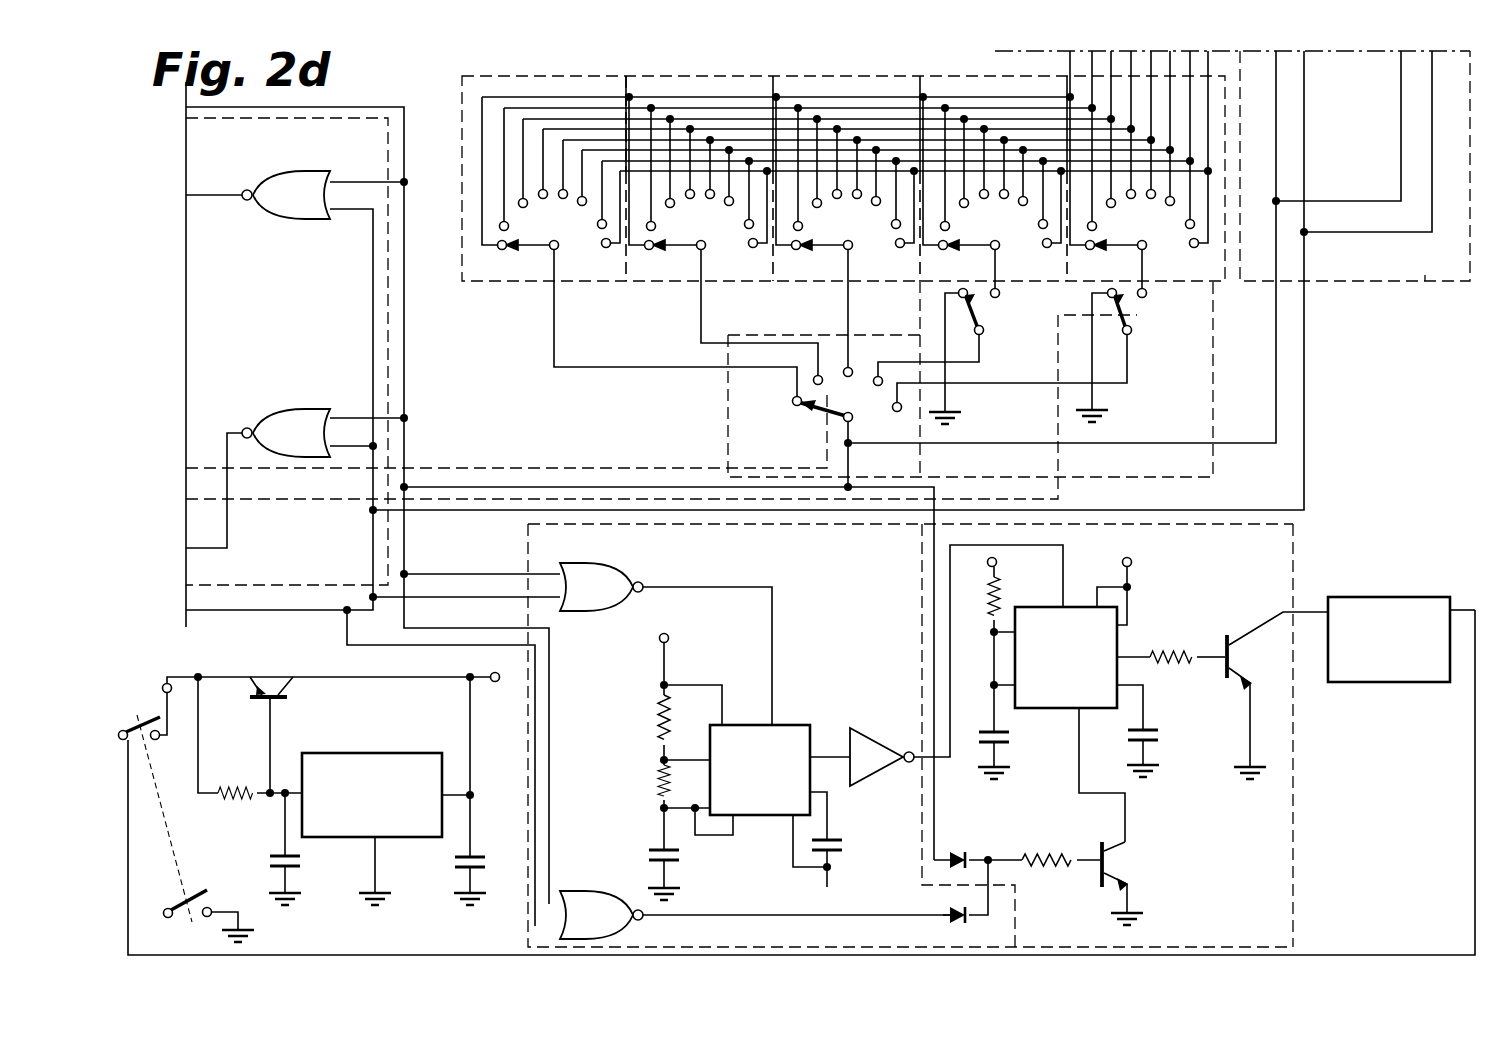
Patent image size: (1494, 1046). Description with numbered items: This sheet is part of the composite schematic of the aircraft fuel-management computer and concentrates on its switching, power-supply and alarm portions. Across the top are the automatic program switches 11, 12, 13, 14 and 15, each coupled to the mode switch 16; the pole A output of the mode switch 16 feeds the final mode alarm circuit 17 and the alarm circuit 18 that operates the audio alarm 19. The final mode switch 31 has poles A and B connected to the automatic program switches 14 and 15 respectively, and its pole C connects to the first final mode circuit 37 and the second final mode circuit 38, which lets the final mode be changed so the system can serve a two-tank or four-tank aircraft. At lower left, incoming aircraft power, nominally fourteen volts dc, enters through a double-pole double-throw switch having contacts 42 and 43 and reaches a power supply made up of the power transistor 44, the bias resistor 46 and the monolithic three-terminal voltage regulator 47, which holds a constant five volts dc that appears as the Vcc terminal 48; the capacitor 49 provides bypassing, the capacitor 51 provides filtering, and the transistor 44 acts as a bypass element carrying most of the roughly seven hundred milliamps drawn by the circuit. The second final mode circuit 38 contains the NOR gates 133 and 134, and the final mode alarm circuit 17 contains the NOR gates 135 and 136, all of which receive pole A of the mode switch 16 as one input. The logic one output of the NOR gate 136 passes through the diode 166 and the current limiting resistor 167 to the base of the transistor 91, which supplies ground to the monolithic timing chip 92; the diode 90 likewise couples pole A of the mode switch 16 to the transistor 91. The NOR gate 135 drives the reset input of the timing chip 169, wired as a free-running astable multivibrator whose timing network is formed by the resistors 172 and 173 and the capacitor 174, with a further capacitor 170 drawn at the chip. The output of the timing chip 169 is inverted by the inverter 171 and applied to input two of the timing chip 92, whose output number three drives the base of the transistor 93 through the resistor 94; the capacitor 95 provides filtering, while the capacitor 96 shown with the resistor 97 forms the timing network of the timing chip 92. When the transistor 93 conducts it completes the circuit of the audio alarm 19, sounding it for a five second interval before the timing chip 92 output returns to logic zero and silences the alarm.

The automatic program switch 11 is at (497, 76).
The automatic program switch 12 is at (688, 76).
The automatic program switch 13 is at (826, 76).
The automatic program switch 14 is at (975, 76).
The automatic program switch 15 is at (1228, 95).
The mode switch 16 is at (728, 418).
The final mode alarm circuit 17 is at (585, 524).
The alarm circuit 18 is at (1300, 563).
The audio alarm 19 is at (1390, 682).
The final mode switch 31 is at (1213, 458).
The first final mode circuit 37 is at (1418, 282).
The second final mode circuit 38 is at (388, 340).
The contact 42 is at (195, 885).
The contact 43 is at (140, 720).
The power transistor 44 is at (262, 690).
The bias resistor 46 is at (240, 790).
The monolithic three-terminal voltage regulator 47 is at (385, 753).
The terminal 48 is at (495, 682).
The capacitor 49 is at (305, 865).
The capacitor 51 is at (487, 867).
The diode 90 is at (955, 850).
The transistor 91 is at (1110, 855).
The monolithic timing chip 92 is at (1082, 607).
The transistor 93 is at (1222, 630).
The resistor 94 is at (1172, 650).
The capacitor 95 is at (1158, 735).
The capacitor 96 is at (1010, 738).
The resistor 97 is at (985, 600).
The NOR gate 133 is at (298, 218).
The NOR gate 134 is at (300, 408).
The NOR gate 135 is at (610, 565).
The NOR gate 136 is at (583, 893).
The diode 166 is at (955, 927).
The current limiting resistor 167 is at (1062, 850).
The timing chip 169 is at (790, 725).
The capacitor 170 is at (845, 846).
The inverter 171 is at (870, 740).
The resistor 172 is at (660, 712).
The resistor 173 is at (660, 782).
The capacitor 174 is at (684, 856).